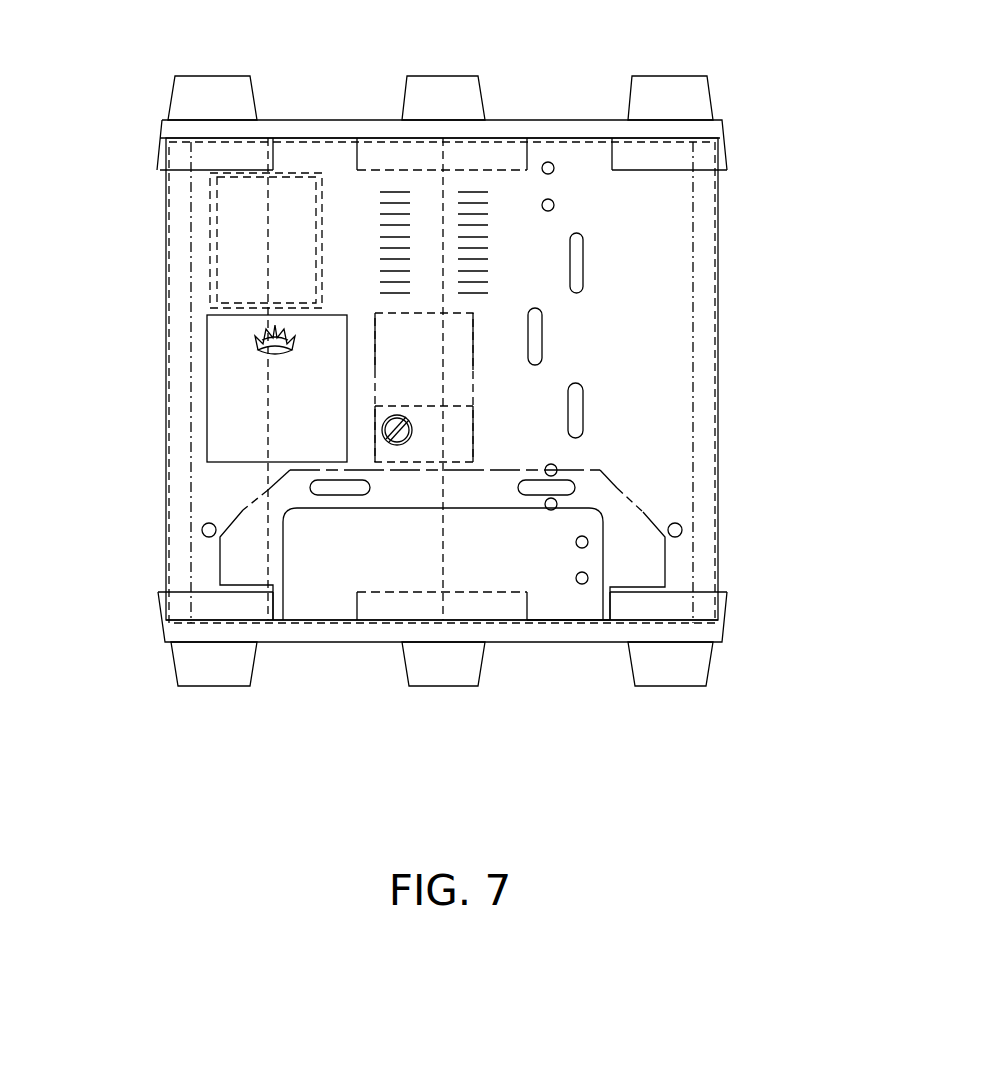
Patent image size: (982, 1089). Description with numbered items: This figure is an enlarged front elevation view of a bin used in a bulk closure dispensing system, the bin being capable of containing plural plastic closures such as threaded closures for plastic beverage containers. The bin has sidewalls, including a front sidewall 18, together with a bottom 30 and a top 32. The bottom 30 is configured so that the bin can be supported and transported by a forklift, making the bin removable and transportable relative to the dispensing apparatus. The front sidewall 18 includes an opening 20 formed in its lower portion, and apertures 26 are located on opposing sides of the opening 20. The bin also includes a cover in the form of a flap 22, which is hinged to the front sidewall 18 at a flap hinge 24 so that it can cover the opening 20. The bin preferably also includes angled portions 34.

The front sidewall 18 is at (598, 392).
The opening 20 is at (333, 600).
The flap 22 is at (268, 490).
The flap hinge 24 is at (592, 627).
The apertures 26 is at (202, 530).
The bottom 30 is at (183, 637).
The top 32 is at (520, 118).
The angled portions 34 is at (203, 237).